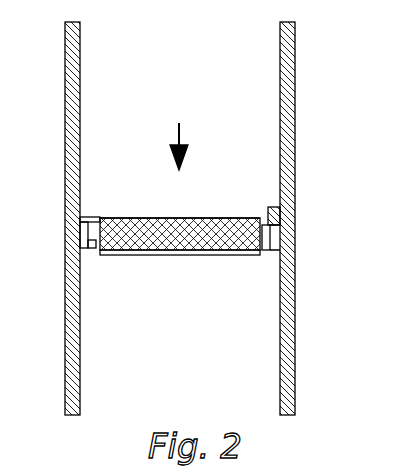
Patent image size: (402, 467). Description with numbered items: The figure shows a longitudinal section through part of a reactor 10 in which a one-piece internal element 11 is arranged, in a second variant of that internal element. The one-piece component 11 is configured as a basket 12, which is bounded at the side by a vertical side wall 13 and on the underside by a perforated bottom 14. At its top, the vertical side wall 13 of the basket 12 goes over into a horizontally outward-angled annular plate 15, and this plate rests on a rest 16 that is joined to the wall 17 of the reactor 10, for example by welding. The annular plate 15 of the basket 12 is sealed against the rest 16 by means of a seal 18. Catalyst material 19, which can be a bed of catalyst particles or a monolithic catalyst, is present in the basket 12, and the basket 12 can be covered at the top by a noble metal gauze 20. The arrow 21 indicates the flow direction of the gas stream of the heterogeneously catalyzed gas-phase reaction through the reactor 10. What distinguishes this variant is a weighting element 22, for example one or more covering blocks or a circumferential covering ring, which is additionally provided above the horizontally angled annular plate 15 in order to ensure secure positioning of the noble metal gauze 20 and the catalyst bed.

The reactor 10 is at (327, 122).
The one-piece internal element 11 is at (160, 282).
The basket 12 is at (101, 263).
The vertical side wall 13 is at (272, 247).
The perforated bottom 14 is at (192, 256).
The annular plate 15 is at (84, 218).
The rest 16 is at (84, 238).
The wall 17 is at (296, 43).
The seal 18 is at (274, 224).
The catalyst material 19 is at (122, 217).
The noble metal gauze 20 is at (226, 217).
The arrow 21 is at (183, 135).
The weighting element 22 is at (88, 216).